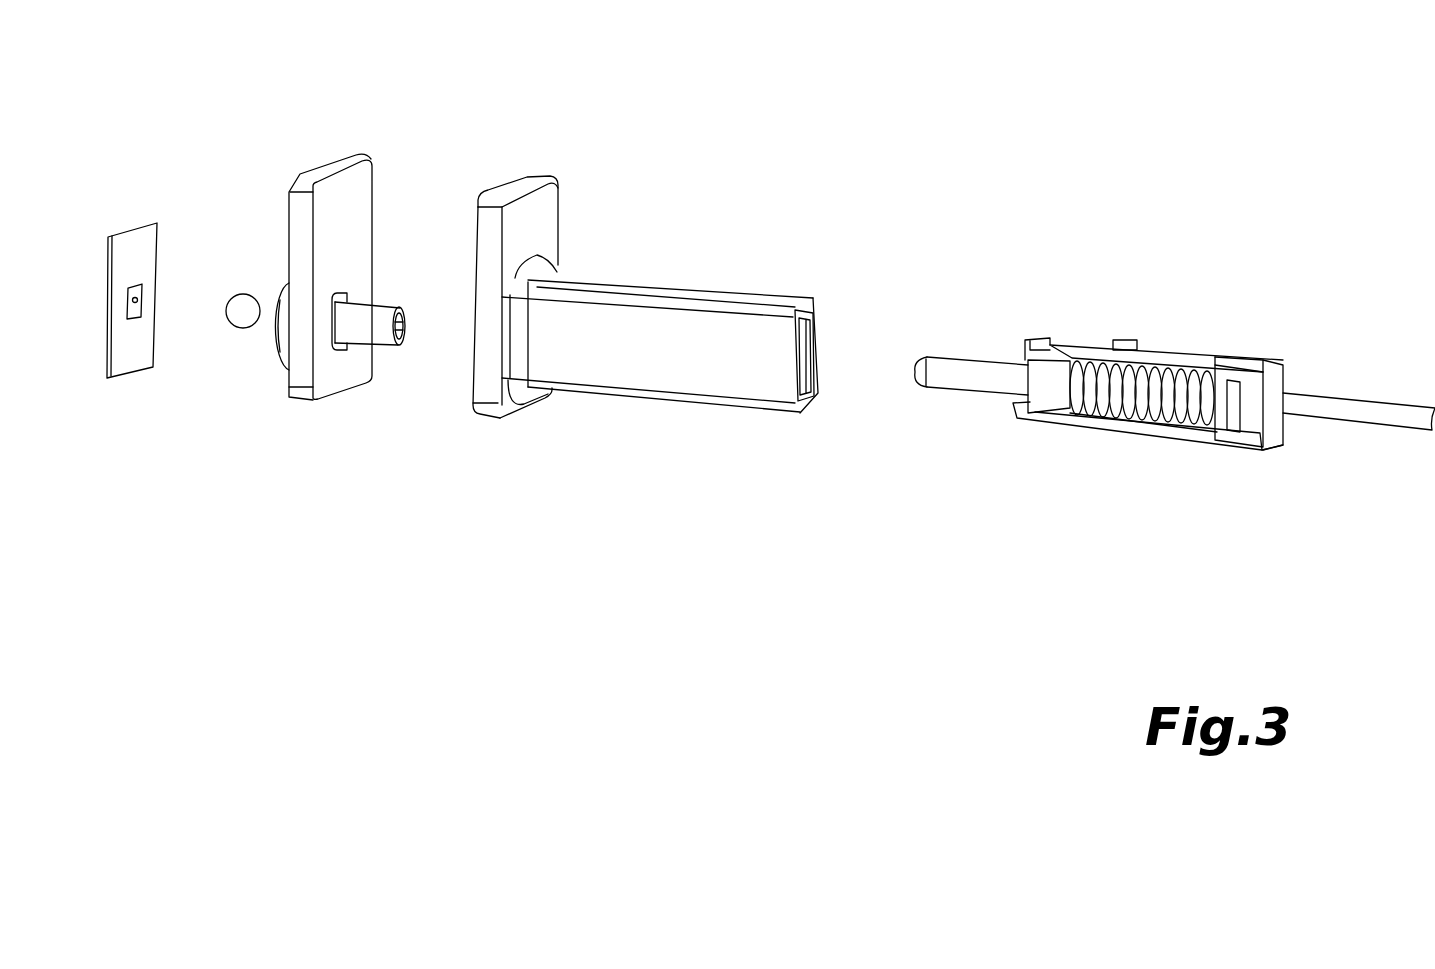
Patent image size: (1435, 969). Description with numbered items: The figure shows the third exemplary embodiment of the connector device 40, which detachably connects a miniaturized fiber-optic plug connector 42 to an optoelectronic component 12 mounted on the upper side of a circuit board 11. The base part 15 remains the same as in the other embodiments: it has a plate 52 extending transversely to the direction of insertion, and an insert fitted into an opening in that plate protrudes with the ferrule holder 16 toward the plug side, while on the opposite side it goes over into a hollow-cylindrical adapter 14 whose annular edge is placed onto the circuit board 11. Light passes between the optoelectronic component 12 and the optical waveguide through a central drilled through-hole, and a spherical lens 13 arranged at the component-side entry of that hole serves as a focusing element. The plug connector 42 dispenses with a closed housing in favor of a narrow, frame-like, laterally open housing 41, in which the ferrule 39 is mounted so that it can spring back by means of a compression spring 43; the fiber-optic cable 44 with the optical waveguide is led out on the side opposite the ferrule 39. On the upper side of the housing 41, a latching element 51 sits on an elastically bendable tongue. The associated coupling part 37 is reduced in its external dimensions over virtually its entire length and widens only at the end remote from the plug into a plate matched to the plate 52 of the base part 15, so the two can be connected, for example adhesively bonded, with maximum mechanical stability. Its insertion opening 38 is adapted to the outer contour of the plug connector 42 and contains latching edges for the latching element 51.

The circuit board 11 is at (123, 334).
The optoelectronic component 12 is at (140, 313).
The spherical lens 13 is at (247, 326).
The adapter 14 is at (288, 275).
The base part 15 is at (374, 220).
The ferrule holder 16 is at (372, 323).
The coupling part 37 is at (668, 323).
The insertion opening 38 is at (803, 378).
The ferrule 39 is at (958, 377).
The connector device 40 is at (680, 334).
The housing 41 is at (1160, 437).
The fiber-optic plug connector 42 is at (1175, 334).
The compression spring 43 is at (1190, 373).
The fiber-optic cable 44 is at (1372, 417).
The latching element 51 is at (1117, 340).
The plate 52 is at (347, 253).